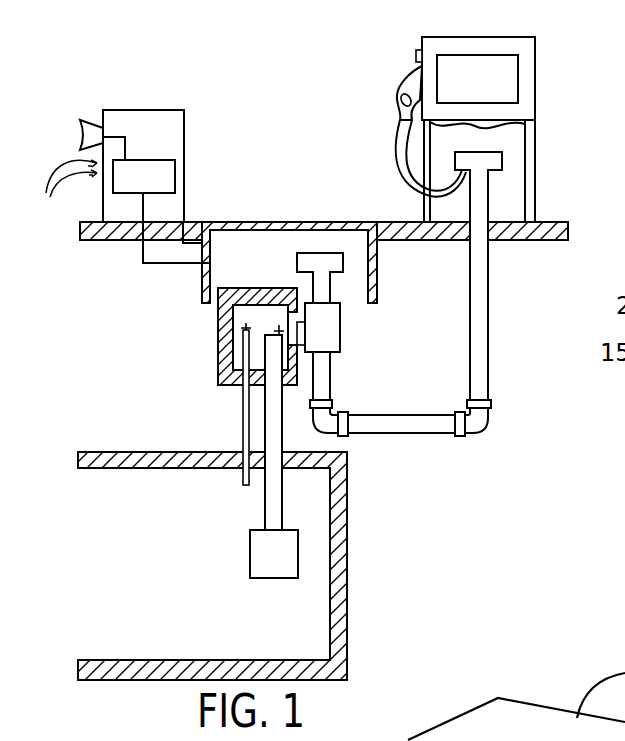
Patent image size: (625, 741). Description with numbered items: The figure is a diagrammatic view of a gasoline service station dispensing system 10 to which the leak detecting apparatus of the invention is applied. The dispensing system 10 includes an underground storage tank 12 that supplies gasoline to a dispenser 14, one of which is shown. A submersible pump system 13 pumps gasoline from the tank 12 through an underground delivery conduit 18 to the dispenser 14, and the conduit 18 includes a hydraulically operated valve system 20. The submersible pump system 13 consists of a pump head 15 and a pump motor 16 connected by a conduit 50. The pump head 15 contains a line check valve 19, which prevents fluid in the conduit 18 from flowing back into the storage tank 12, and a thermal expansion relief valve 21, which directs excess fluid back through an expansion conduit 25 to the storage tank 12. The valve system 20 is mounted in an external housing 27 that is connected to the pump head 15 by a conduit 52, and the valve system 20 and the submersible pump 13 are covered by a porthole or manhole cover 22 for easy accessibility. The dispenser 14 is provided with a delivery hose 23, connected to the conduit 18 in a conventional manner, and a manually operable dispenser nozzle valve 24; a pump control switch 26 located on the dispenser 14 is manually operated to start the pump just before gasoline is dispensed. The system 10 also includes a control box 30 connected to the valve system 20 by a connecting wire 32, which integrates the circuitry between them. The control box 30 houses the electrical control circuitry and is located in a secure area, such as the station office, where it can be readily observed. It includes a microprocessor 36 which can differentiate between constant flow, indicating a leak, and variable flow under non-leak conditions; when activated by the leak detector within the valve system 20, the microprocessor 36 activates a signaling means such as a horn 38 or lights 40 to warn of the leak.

The dispensing system 10 is at (401, 452).
The underground storage tank 12 is at (348, 572).
The submersible pump system 13 is at (300, 395).
The dispenser 14 is at (535, 58).
The pump head 15 is at (218, 376).
The pump motor 16 is at (250, 557).
The conduit 18 is at (435, 433).
The line check valve 19 is at (276, 328).
The valve system 20 is at (331, 286).
The thermal expansion relief valve 21 is at (244, 332).
The manhole cover 22 is at (263, 221).
The delivery hose 23 is at (395, 163).
The dispenser nozzle valve 24 is at (396, 95).
The expansion conduit 25 is at (245, 428).
The pump control switch 26 is at (416, 58).
The external housing 27 is at (341, 338).
The control box 30 is at (185, 132).
The connecting wire 32 is at (170, 264).
The microprocessor 36 is at (185, 182).
The horn 38 is at (77, 136).
The lights 40 is at (67, 191).
The conduit 50 is at (283, 408).
The conduit 52 is at (303, 358).